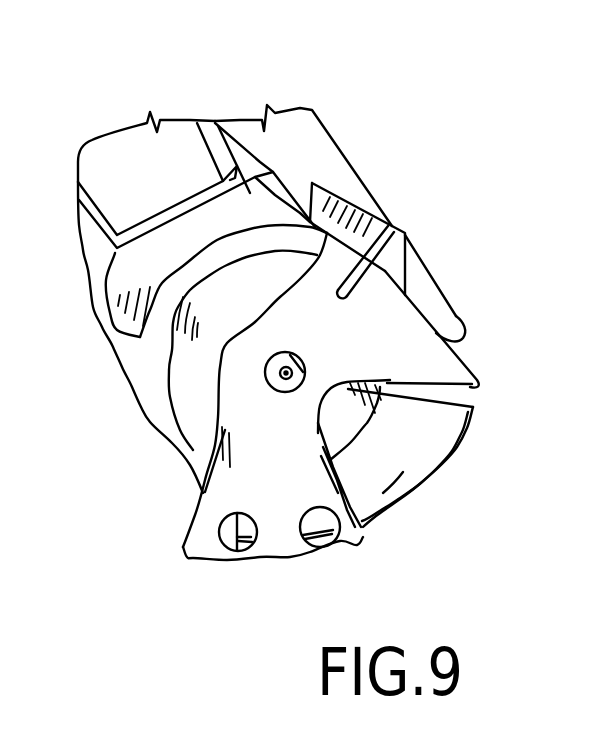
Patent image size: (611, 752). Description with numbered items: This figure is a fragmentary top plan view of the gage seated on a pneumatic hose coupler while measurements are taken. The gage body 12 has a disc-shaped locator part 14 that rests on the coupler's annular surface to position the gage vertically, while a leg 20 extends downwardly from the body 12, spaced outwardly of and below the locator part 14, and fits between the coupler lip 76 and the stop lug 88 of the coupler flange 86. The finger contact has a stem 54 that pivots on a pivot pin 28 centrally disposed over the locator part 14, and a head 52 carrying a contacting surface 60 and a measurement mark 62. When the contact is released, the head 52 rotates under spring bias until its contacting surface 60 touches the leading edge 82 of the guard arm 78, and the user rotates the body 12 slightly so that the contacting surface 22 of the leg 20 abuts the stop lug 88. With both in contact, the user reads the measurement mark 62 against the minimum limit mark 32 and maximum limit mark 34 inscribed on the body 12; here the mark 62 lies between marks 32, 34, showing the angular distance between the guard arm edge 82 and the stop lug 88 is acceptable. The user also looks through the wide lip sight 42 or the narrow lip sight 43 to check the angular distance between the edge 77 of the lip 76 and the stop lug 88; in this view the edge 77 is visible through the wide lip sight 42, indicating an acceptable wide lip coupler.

The body 12 is at (180, 466).
The locator part 14 is at (180, 372).
The leg 20 is at (478, 388).
The contacting surface 22 is at (458, 351).
The pivot pin 28 is at (285, 380).
The minimum limit mark 32 is at (360, 290).
The maximum limit mark 34 is at (337, 290).
The wide lip sight 42 is at (222, 538).
The narrow lip sight 43 is at (338, 536).
The head 52 is at (332, 222).
The stem 54 is at (266, 365).
The contacting surface 60 is at (312, 223).
The measurement mark 62 is at (386, 230).
The lip 76 is at (428, 478).
The edge 77 is at (240, 535).
The guard arm 78 is at (123, 277).
The leading edge 82 is at (218, 178).
The flange 86 is at (430, 292).
The stop lug 88 is at (456, 320).